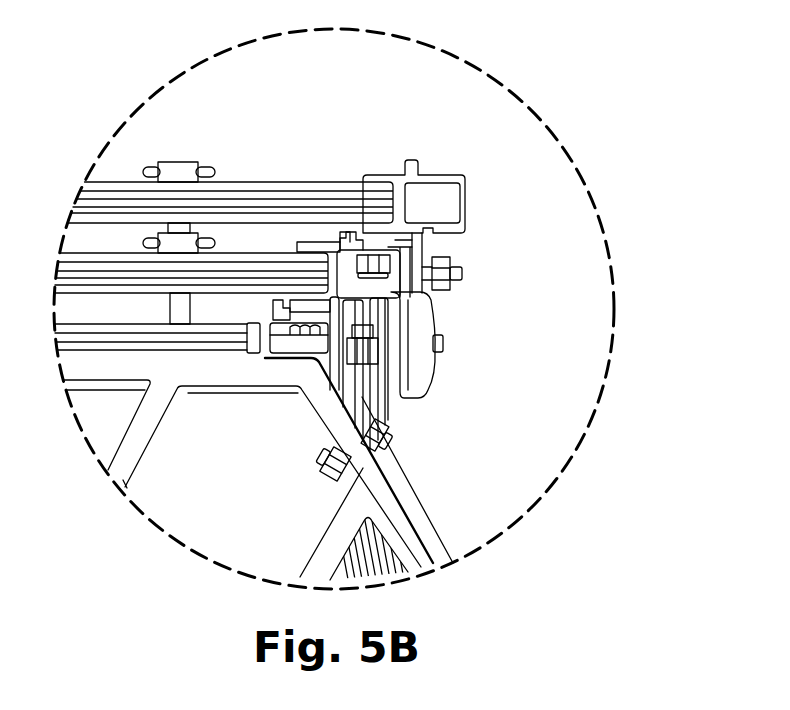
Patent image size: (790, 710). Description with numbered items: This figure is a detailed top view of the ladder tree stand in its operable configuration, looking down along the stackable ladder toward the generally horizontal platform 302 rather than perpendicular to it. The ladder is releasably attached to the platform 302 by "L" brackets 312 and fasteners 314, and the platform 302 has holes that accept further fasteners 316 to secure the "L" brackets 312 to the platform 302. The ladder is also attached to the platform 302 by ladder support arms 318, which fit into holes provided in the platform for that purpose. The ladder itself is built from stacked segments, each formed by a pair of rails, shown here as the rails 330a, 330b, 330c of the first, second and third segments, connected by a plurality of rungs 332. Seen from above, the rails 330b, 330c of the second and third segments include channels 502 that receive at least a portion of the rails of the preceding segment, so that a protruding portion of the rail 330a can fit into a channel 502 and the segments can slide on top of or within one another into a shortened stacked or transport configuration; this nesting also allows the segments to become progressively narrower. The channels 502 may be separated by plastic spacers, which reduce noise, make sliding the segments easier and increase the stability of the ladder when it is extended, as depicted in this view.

The platform 302 is at (408, 548).
The "L" bracket 312 is at (408, 512).
The fastener 314 is at (357, 350).
The fastener 316 is at (380, 446).
The ladder support arm 318 is at (375, 402).
The rail 330a is at (265, 317).
The rail 330b is at (336, 250).
The rail 330c is at (466, 202).
The rung 332 is at (249, 192).
The channel 502 is at (388, 247).